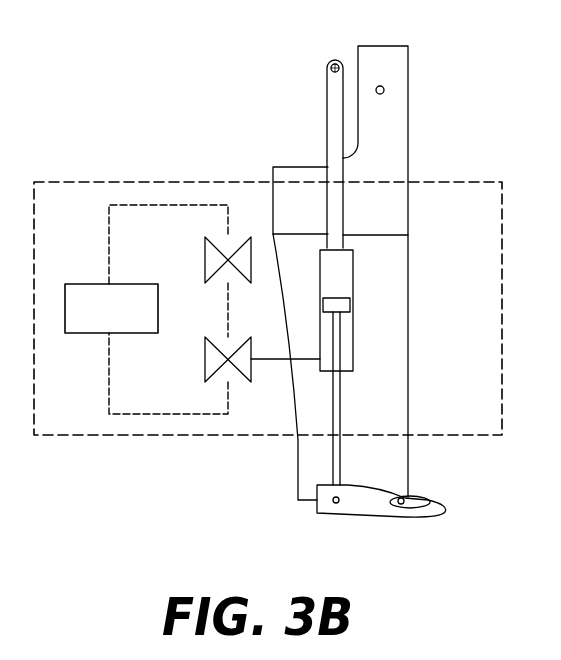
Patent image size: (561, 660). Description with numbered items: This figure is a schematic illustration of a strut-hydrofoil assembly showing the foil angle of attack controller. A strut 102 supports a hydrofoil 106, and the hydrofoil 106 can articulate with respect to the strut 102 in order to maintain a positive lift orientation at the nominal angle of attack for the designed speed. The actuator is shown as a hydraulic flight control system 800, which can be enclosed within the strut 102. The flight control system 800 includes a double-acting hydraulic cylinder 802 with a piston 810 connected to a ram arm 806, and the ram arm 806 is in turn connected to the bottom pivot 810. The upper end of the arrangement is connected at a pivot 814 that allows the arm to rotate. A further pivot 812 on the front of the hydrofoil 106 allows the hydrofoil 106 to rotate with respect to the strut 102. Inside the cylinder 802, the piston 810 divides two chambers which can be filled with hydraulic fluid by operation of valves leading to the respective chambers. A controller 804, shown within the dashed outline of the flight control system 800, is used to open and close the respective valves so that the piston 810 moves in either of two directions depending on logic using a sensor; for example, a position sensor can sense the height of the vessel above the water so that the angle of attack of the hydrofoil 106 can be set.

The hydraulic flight control system 800 is at (87, 182).
The controller 804 is at (87, 284).
The strut 102 is at (408, 462).
The ram arm 806 is at (341, 408).
The pivot 814 is at (331, 67).
The double-acting hydraulic cylinder 802 is at (355, 327).
The piston 810 is at (343, 303).
The hydrofoil 106 is at (367, 510).
The pivot 812 is at (405, 507).